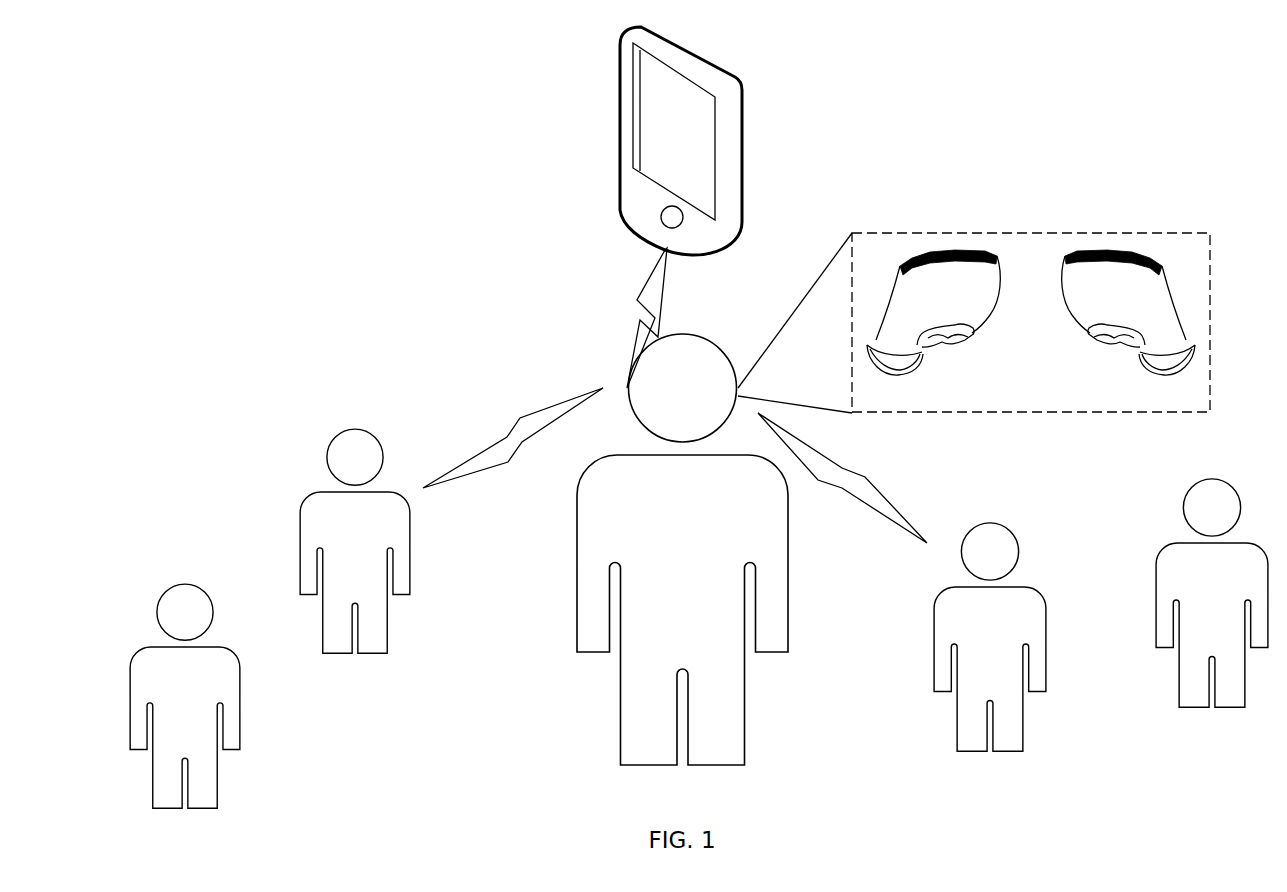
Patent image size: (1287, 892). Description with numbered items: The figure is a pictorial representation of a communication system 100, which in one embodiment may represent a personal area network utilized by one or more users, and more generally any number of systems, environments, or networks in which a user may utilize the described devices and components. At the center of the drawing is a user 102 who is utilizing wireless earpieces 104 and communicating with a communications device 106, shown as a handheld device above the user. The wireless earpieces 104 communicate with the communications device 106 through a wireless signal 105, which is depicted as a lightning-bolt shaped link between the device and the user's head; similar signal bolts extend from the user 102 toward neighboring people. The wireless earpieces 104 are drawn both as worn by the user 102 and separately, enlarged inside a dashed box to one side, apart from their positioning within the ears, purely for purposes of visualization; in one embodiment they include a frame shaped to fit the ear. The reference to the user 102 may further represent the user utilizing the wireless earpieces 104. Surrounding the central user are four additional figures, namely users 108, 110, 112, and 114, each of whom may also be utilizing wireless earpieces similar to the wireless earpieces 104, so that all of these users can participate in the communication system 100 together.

The communication system 100 is at (288, 200).
The user 102 is at (666, 525).
The wireless earpieces 104 is at (1070, 263).
The wireless signal 105 is at (540, 430).
The communications device 106 is at (740, 88).
The user 108 is at (339, 534).
The user 110 is at (169, 694).
The user 112 is at (974, 626).
The user 114 is at (1196, 584).